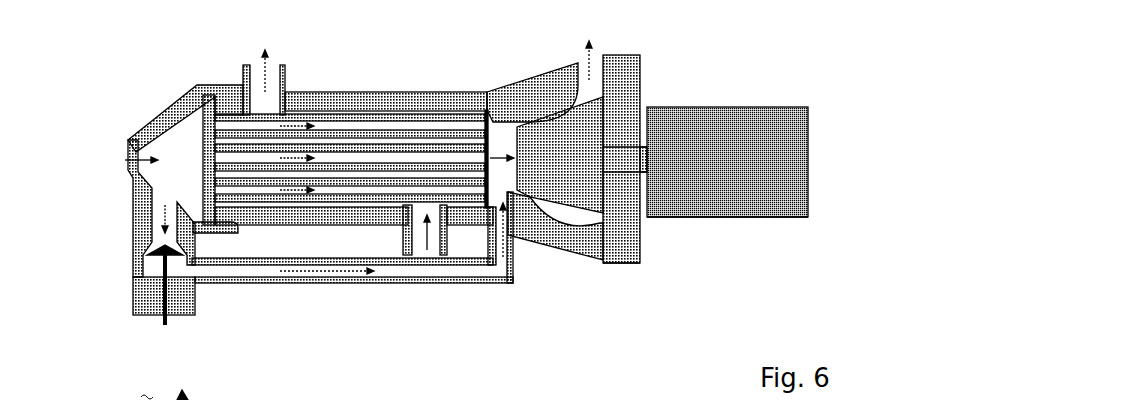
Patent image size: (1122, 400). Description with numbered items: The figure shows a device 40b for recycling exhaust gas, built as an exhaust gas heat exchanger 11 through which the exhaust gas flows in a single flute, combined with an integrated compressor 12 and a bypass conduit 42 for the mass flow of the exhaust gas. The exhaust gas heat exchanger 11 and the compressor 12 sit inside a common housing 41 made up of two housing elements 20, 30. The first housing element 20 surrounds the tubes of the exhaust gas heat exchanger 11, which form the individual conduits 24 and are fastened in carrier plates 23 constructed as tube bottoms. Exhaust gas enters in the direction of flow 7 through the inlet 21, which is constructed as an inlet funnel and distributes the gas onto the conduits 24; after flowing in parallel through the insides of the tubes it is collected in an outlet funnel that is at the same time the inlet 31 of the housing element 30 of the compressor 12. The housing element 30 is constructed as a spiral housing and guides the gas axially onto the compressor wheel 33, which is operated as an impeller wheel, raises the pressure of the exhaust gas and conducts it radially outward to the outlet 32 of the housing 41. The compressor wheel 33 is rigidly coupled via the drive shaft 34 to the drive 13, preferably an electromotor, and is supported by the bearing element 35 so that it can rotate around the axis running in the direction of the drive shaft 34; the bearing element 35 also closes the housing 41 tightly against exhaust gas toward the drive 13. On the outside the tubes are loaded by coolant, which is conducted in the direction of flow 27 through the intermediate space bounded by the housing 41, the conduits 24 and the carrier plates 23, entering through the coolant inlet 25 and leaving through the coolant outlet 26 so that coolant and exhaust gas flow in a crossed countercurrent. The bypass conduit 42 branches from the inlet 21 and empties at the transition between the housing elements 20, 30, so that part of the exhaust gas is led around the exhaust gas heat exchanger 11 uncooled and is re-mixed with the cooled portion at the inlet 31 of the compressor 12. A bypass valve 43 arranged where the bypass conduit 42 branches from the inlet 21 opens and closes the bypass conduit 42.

The direction of flow 7 is at (127, 160).
The exhaust gas heat exchanger 11 is at (450, 302).
The compressor 12 is at (645, 277).
The drive 13 is at (703, 210).
The first housing element 20 is at (380, 213).
The inlet 21 is at (195, 83).
The carrier plates 23 is at (200, 138).
The conduits 24 is at (328, 183).
The inlet for the coolant 25 is at (445, 238).
The outlet for the coolant 26 is at (285, 70).
The direction of flow of the coolant 27 is at (253, 67).
The second housing element 30 is at (580, 253).
The inlet of the compressor 31 is at (492, 128).
The outlet 32 is at (595, 65).
The compressor wheel 33 is at (543, 73).
The drive shaft 34 is at (645, 143).
The bearing element 35 is at (640, 72).
The device 40b is at (809, 50).
The housing 41 is at (387, 95).
The bypass conduit 42 is at (240, 270).
The bypass valve 43 is at (178, 315).